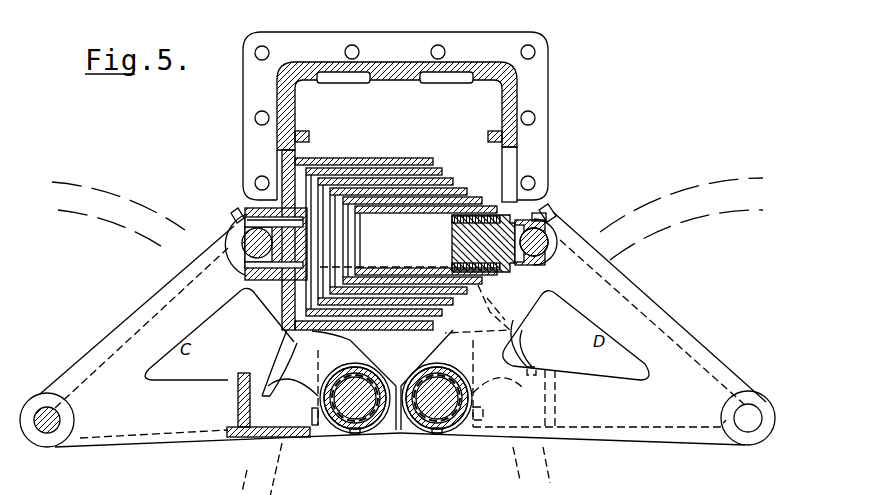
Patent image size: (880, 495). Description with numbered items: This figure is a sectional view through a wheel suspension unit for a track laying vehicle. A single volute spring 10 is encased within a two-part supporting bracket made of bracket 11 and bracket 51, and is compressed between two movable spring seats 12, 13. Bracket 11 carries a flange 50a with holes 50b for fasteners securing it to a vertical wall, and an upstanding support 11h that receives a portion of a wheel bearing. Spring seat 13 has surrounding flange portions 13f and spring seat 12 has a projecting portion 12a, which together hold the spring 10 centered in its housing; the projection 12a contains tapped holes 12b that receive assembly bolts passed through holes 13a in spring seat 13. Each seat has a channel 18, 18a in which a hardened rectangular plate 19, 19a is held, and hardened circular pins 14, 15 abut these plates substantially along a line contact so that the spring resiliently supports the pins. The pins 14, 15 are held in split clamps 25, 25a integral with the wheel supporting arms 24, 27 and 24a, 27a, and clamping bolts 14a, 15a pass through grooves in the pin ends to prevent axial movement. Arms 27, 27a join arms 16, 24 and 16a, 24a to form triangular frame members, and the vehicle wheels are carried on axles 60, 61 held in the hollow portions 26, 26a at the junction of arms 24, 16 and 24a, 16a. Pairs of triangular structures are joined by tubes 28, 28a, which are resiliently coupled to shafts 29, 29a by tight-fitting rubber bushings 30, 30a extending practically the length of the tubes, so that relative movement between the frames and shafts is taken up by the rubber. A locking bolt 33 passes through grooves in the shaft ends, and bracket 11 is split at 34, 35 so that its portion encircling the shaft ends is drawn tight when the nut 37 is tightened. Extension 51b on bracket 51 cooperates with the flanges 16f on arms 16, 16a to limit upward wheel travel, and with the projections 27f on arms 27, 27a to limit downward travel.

The flange 50a is at (414, 42).
The holes 50b is at (526, 48).
The bracket 11 is at (542, 141).
The upstanding support 11h is at (398, 70).
The spring seat 13 is at (282, 170).
The flange portions 13f is at (310, 157).
The holes 13a is at (247, 220).
The volute spring 10 is at (413, 160).
The spring seat 12 is at (543, 208).
The projecting portion 12a is at (458, 238).
The tapped holes 12b is at (453, 221).
The pin 14 is at (559, 255).
The clamping bolt 14a is at (553, 212).
The channel 18 is at (552, 221).
The hardened rectangular plate 19 is at (556, 240).
The split clamp 25 is at (557, 242).
The pin 15 is at (241, 240).
The clamping bolt 15a is at (236, 213).
The split clamp 25a is at (237, 257).
The channel 18a is at (248, 261).
The hardened rectangular plate 19a is at (308, 230).
The wheel supporting arm 24 is at (638, 307).
The wheel supporting arm 24a is at (108, 337).
The hollow portion 26 is at (748, 398).
The hollow portion 26a is at (33, 403).
The axle 60 is at (750, 423).
The axle 61 is at (50, 433).
The arm 16 is at (647, 437).
The arm 16a is at (142, 440).
The flanges 16f is at (278, 433).
The bracket 51 is at (382, 380).
The extension 51b is at (262, 368).
The wheel supporting arm 27 is at (523, 313).
The wheel supporting arm 27a is at (287, 321).
The projections 27f is at (488, 300).
The tube 28 is at (440, 365).
The tube 28a is at (333, 367).
The shaft 29 is at (460, 397).
The shaft 29a is at (338, 400).
The rubber bushing 30 is at (453, 427).
The rubber bushing 30a is at (347, 427).
The locking bolt 33 is at (315, 417).
The split 34 is at (357, 438).
The split 35 is at (437, 437).
The nut 37 is at (484, 417).